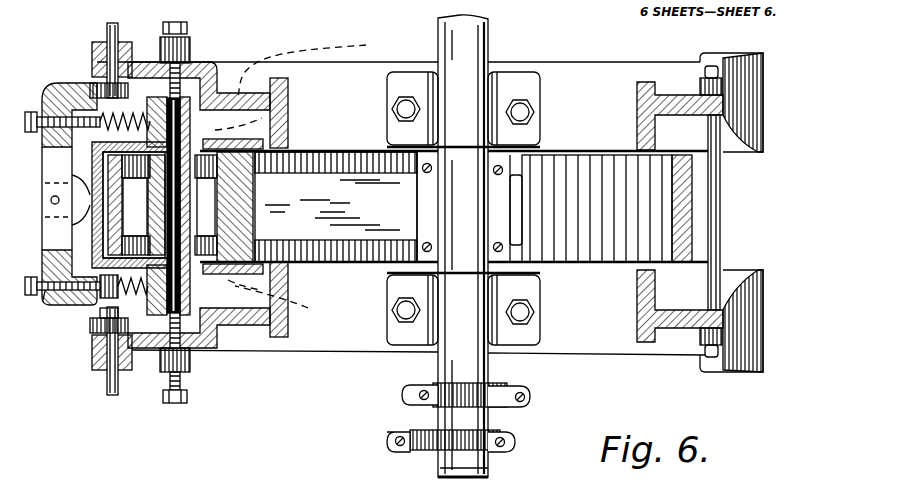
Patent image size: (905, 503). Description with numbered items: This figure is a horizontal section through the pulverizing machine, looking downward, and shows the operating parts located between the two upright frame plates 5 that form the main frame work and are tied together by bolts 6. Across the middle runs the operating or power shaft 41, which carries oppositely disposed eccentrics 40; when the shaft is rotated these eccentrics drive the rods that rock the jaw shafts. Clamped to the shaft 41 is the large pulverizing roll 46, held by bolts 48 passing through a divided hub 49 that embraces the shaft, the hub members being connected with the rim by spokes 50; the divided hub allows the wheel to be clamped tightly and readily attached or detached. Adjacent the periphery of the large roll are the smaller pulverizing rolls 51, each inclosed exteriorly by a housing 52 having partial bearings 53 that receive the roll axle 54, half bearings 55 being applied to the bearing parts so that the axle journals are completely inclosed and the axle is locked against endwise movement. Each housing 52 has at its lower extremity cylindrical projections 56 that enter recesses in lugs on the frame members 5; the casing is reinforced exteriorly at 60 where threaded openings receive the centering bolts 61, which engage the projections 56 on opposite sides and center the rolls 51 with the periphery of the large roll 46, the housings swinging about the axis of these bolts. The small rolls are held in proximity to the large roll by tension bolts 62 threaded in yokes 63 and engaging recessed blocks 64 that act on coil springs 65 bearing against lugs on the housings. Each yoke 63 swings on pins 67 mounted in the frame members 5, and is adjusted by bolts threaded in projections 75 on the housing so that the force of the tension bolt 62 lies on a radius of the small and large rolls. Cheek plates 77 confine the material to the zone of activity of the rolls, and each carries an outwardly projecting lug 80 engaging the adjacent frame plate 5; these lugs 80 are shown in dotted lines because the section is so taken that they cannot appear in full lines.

The upright frame plate 5 is at (684, 112).
The bolt 6 is at (721, 248).
The eccentric 40 is at (510, 408).
The operating shaft 41 is at (450, 367).
The large pulverizing roll 46 is at (692, 210).
The bolt 48 is at (427, 168).
The divided hub 49 is at (512, 165).
The spoke 50 is at (562, 273).
The small pulverizing roll 51 is at (268, 72).
The housing 52 is at (100, 302).
The partial bearing 53 is at (152, 95).
The roll axle 54 is at (228, 95).
The half bearing 55 is at (200, 120).
The cylindrical projection 56 is at (190, 110).
The reinforcement 60 is at (192, 42).
The centering bolt 61 is at (187, 28).
The tension bolt 62 is at (30, 133).
The yoke 63 is at (72, 235).
The spring 64 is at (100, 115).
The coil spring 65 is at (97, 92).
The pin 67 is at (110, 30).
The projection 75 is at (46, 195).
The cheek plate 77 is at (290, 126).
The lug 80 is at (303, 179).